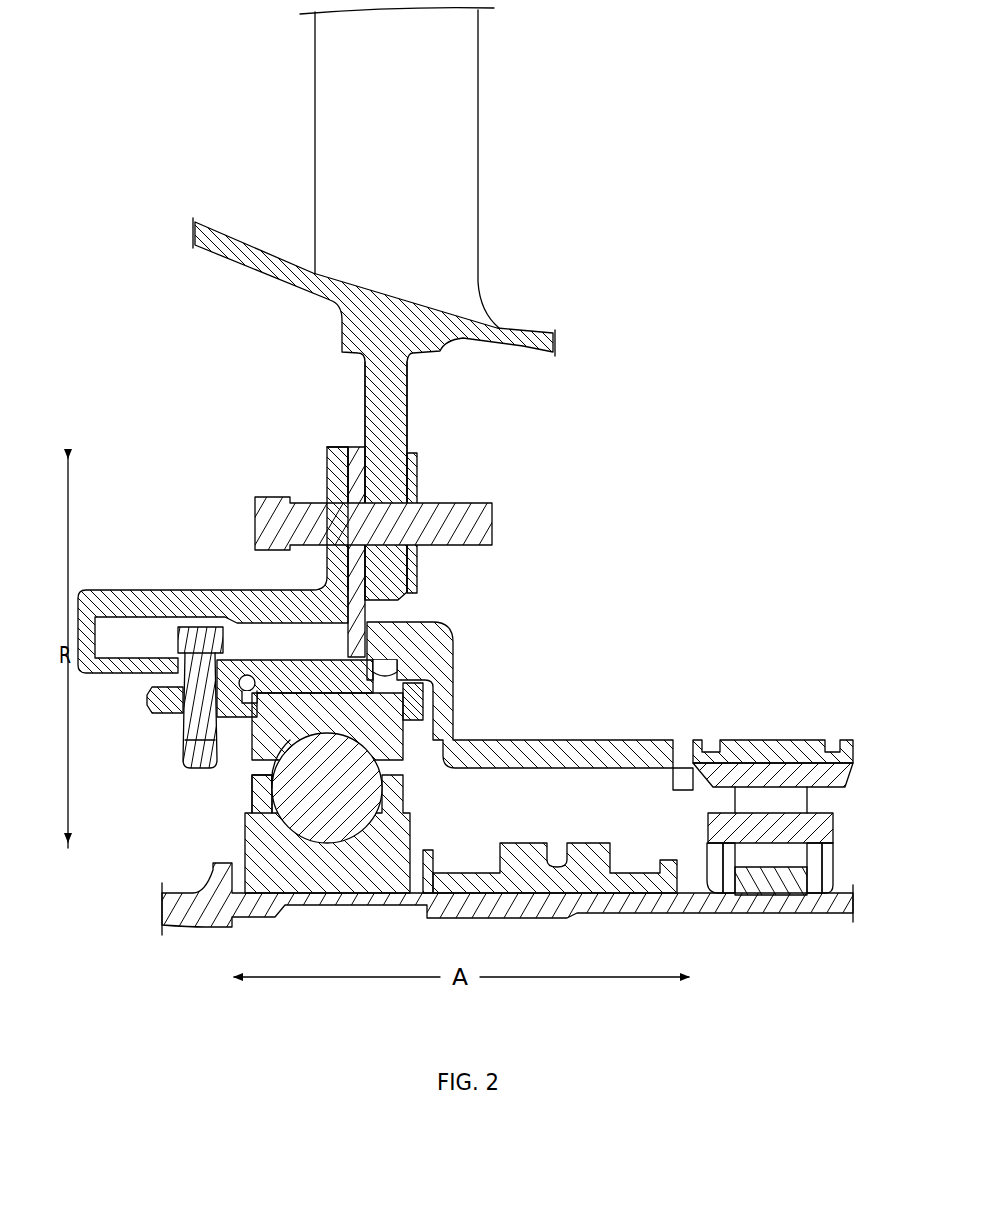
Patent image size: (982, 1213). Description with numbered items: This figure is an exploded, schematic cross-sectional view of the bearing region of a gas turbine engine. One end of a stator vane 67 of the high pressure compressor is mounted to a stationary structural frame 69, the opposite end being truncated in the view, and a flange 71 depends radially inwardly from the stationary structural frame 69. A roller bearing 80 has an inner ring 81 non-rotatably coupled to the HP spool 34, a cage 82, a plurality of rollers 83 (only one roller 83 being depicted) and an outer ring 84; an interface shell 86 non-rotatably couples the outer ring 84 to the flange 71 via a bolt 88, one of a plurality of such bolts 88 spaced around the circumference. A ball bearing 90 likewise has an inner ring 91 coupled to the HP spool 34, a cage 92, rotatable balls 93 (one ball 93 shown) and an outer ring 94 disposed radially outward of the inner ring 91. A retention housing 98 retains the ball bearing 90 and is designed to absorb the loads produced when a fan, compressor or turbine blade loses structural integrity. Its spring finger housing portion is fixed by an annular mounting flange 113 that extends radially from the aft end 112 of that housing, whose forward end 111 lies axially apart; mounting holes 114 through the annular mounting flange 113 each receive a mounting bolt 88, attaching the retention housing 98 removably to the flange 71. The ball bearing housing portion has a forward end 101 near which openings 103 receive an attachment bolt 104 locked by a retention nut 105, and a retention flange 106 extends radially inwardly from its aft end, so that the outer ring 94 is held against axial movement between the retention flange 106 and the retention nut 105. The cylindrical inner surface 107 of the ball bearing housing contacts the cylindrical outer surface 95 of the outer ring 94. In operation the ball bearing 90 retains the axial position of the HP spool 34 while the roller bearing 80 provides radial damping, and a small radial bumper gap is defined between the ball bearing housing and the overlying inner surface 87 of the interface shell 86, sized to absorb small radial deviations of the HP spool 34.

The HP spool 34 is at (493, 905).
The stator vane 67 is at (463, 229).
The stationary structural frame 69 is at (523, 333).
The flange 71 is at (400, 418).
The roller bearing 80 is at (690, 815).
The inner ring 81 is at (707, 880).
The cage 82 is at (829, 830).
The roller 83 is at (768, 853).
The outer ring 84 is at (842, 771).
The interface shell 86 is at (512, 752).
The inner surface 87 is at (398, 664).
The bolt 88 is at (448, 515).
The ball bearing 90 is at (438, 803).
The inner ring 91 is at (403, 840).
The cage 92 is at (262, 803).
The ball 93 is at (283, 780).
The outer ring 94 is at (270, 742).
The outer surface 95 is at (330, 688).
The retention housing 98 is at (171, 535).
The forward end 101 is at (185, 656).
The opening 103 is at (215, 655).
The attachment bolt 104 is at (193, 742).
The retention nut 105 is at (160, 700).
The retention flange 106 is at (413, 713).
The inner surface 107 is at (398, 700).
The forward end 111 is at (89, 594).
The aft end 112 is at (298, 577).
The annular mounting flange 113 is at (332, 462).
The mounting hole 114 is at (318, 518).